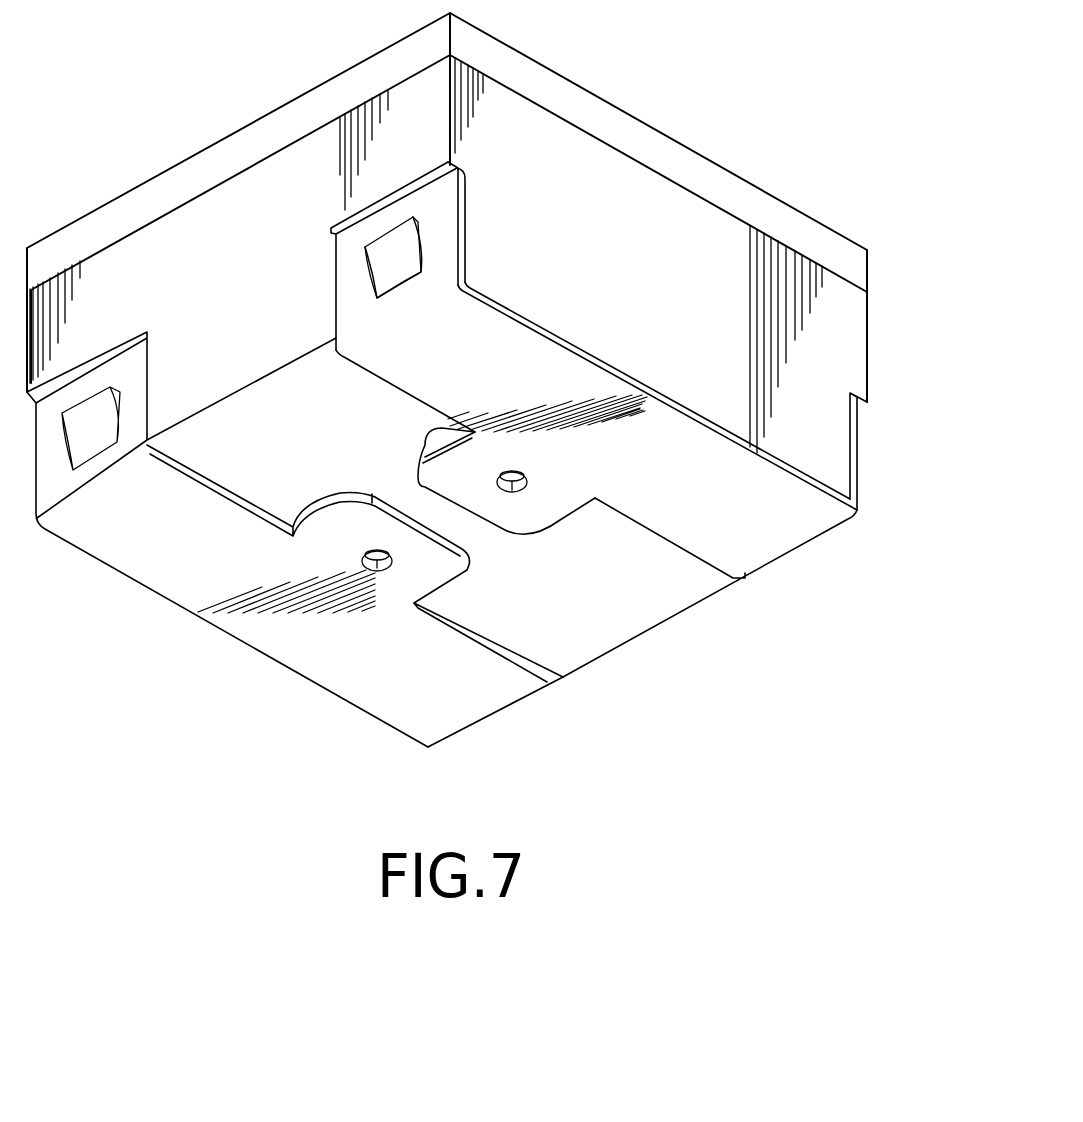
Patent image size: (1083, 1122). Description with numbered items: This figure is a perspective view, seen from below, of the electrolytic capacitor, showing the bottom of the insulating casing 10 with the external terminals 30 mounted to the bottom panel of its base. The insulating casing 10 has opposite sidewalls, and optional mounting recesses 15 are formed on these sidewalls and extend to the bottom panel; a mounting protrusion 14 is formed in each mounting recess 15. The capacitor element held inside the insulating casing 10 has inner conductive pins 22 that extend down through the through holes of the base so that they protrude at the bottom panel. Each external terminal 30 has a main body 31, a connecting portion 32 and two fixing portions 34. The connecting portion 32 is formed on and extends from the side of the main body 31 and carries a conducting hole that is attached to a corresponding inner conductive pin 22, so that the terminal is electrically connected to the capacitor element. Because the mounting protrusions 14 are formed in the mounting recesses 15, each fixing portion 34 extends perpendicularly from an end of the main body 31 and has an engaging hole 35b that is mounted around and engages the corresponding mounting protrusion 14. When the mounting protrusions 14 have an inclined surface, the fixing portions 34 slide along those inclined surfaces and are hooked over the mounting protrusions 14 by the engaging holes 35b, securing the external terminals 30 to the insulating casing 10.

The insulating casing 10 is at (634, 113).
The mounting protrusion 14 is at (396, 254).
The mounting recess 15 is at (333, 263).
The inner conductive pin 22 is at (377, 570).
The external terminal 30 is at (618, 363).
The main body 31 is at (715, 498).
The connecting portion 32 is at (548, 500).
The fixing portion 34 is at (440, 218).
The engaging hole 35b is at (403, 282).